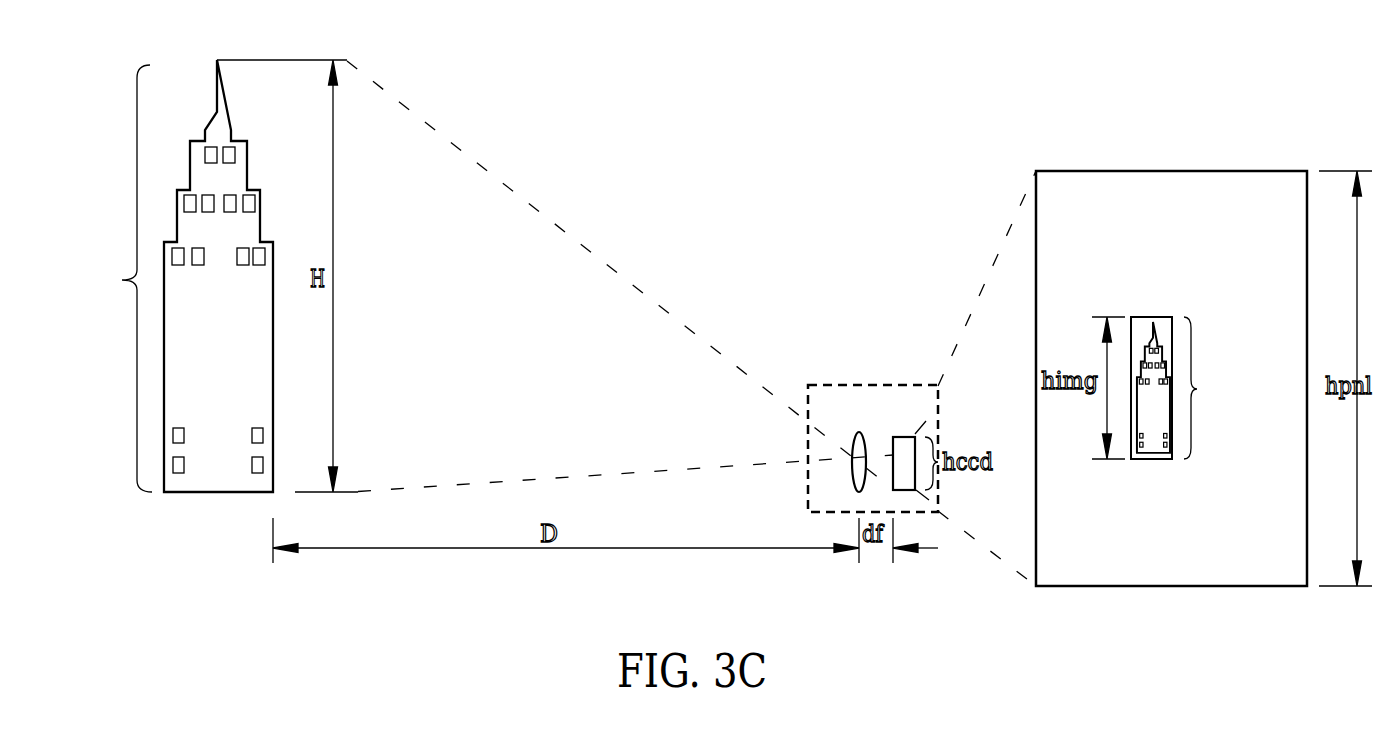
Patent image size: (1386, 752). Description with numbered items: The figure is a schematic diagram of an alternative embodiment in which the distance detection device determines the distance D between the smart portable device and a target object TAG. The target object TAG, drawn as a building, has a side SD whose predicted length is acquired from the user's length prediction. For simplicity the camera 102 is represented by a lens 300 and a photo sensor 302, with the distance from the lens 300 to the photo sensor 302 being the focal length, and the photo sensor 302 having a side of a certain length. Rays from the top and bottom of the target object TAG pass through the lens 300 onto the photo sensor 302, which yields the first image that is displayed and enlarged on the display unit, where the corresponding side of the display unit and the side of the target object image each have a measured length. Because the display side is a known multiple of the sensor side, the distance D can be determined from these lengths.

The camera 102 is at (807, 458).
The lens 300 is at (858, 433).
The photo sensor 302 is at (903, 443).
The target object TAG is at (217, 493).
The side of the target object SD is at (122, 280).